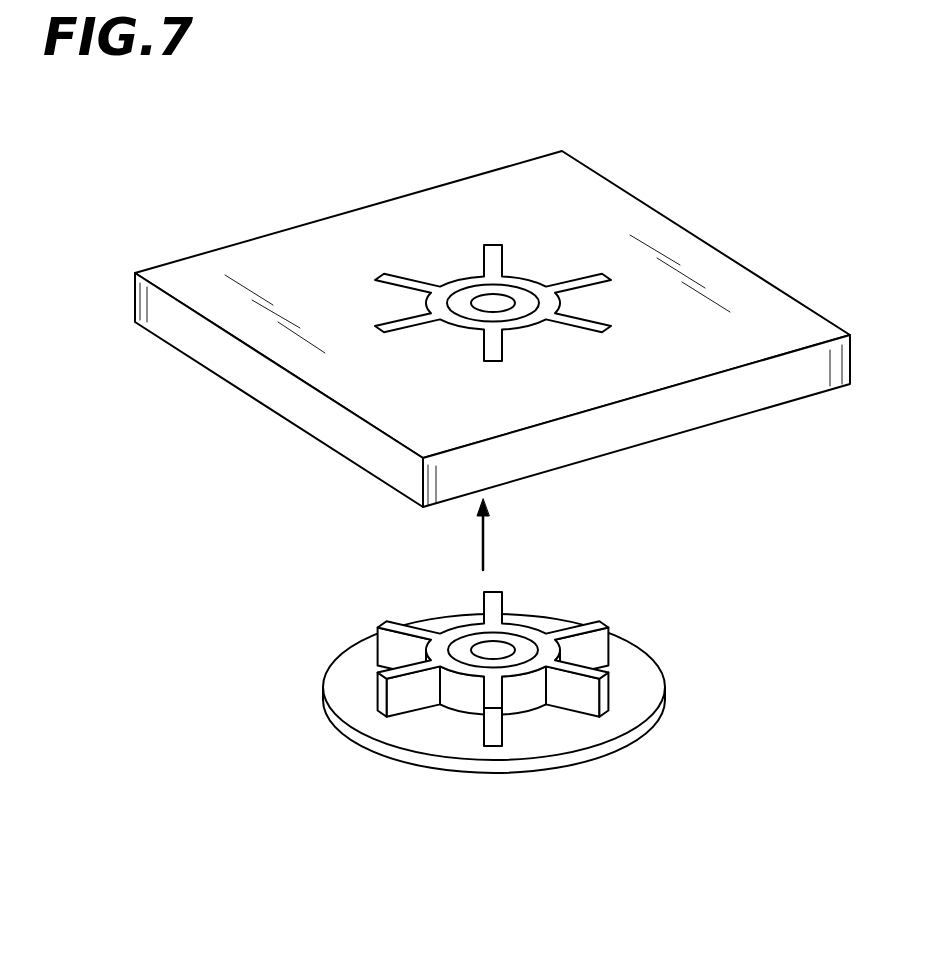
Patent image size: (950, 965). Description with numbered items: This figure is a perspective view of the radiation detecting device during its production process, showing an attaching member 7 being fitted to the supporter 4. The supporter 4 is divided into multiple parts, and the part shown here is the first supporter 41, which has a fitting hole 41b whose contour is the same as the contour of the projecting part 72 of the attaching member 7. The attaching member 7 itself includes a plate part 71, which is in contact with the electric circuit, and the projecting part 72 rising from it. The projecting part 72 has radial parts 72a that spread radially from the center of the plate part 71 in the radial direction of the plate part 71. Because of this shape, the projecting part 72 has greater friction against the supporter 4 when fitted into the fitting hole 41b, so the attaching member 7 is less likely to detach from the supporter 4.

The supporter 4 is at (492, 329).
The first supporter 41 is at (697, 237).
The fitting hole 41b is at (453, 283).
The attaching member 7 is at (512, 700).
The plate part 71 is at (493, 770).
The projecting part 72 is at (512, 696).
The radial parts 72a is at (483, 597).